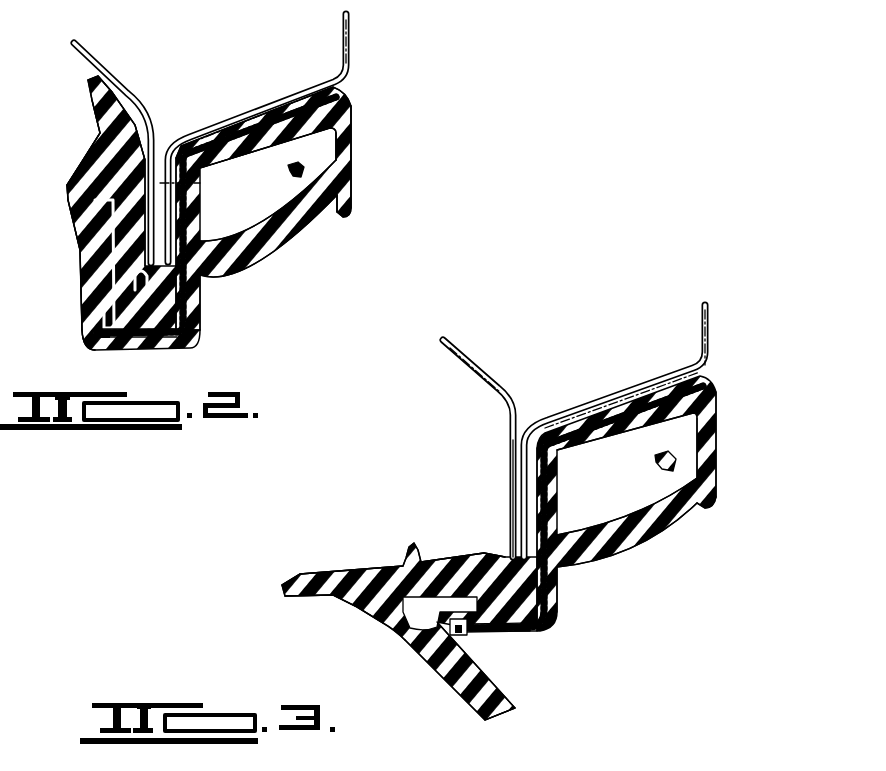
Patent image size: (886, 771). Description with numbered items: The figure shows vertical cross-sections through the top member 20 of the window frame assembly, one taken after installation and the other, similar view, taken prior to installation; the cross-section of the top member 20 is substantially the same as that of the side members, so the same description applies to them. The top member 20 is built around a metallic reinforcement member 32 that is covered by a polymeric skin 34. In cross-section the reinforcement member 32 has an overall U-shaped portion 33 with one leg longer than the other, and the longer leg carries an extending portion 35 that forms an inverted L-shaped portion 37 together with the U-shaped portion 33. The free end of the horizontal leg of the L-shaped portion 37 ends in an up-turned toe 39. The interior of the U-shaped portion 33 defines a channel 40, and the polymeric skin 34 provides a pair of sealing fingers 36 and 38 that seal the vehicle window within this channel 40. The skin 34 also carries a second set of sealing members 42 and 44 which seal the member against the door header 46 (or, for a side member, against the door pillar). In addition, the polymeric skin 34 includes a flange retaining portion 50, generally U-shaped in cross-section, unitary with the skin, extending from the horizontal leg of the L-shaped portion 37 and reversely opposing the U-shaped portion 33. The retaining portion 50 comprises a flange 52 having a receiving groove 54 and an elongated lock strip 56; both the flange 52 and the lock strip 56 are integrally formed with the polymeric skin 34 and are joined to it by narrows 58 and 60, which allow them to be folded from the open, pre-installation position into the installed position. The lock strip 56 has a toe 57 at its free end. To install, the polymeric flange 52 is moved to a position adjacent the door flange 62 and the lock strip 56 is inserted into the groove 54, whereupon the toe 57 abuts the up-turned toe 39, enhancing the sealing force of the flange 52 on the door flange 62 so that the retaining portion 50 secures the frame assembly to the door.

In FIG. 2, the top member 20 is at (358, 234).
In FIG. 3, the metallic reinforcement member 32 is at (719, 473).
In FIG. 2, the U-shaped portion 33 is at (256, 128).
In FIG. 3, the U-shaped portion 33 is at (617, 425).
In FIG. 2, the polymeric skin 34 is at (355, 180).
In FIG. 3, the polymeric skin 34 is at (715, 445).
In FIG. 2, the base strip 35 is at (150, 333).
In FIG. 3, the base strip 35 is at (522, 630).
In FIG. 3, the sealing finger 36 is at (660, 456).
In FIG. 2, the inverted L-shaped portion 37 is at (358, 142).
In FIG. 3, the inverted L-shaped portion 37 is at (548, 598).
In FIG. 2, the sealing finger 38 is at (306, 228).
In FIG. 3, the sealing finger 38 is at (637, 537).
In FIG. 2, the up-turned toe 39 is at (100, 330).
In FIG. 3, the up-turned toe 39 is at (462, 632).
In FIG. 2, the channel 40 is at (247, 217).
In FIG. 3, the channel 40 is at (610, 487).
In FIG. 2, the sealing member 42 is at (223, 133).
In FIG. 3, the sealing member 42 is at (590, 413).
In FIG. 2, the sealing member 44 is at (352, 92).
In FIG. 3, the sealing member 44 is at (708, 374).
In FIG. 2, the door header 46 is at (350, 19).
In FIG. 3, the door header 46 is at (708, 322).
In FIG. 2, the flange retaining portion 50 is at (69, 146).
In FIG. 3, the flange retaining portion 50 is at (337, 625).
In FIG. 2, the flange 52 is at (120, 231).
In FIG. 3, the flange 52 is at (457, 575).
In FIG. 2, the receiving groove 54 is at (75, 222).
In FIG. 3, the receiving groove 54 is at (405, 635).
In FIG. 2, the lock strip 56 is at (298, 170).
In FIG. 3, the lock strip 56 is at (444, 670).
In FIG. 2, the toe 57 is at (110, 322).
In FIG. 3, the toe 57 is at (512, 707).
In FIG. 2, the narrow 58 is at (180, 285).
In FIG. 3, the narrow 58 is at (487, 578).
In FIG. 2, the narrow 60 is at (67, 195).
In FIG. 3, the narrow 60 is at (410, 640).
In FIG. 2, the door flange 62 is at (197, 182).
In FIG. 3, the door flange 62 is at (508, 480).